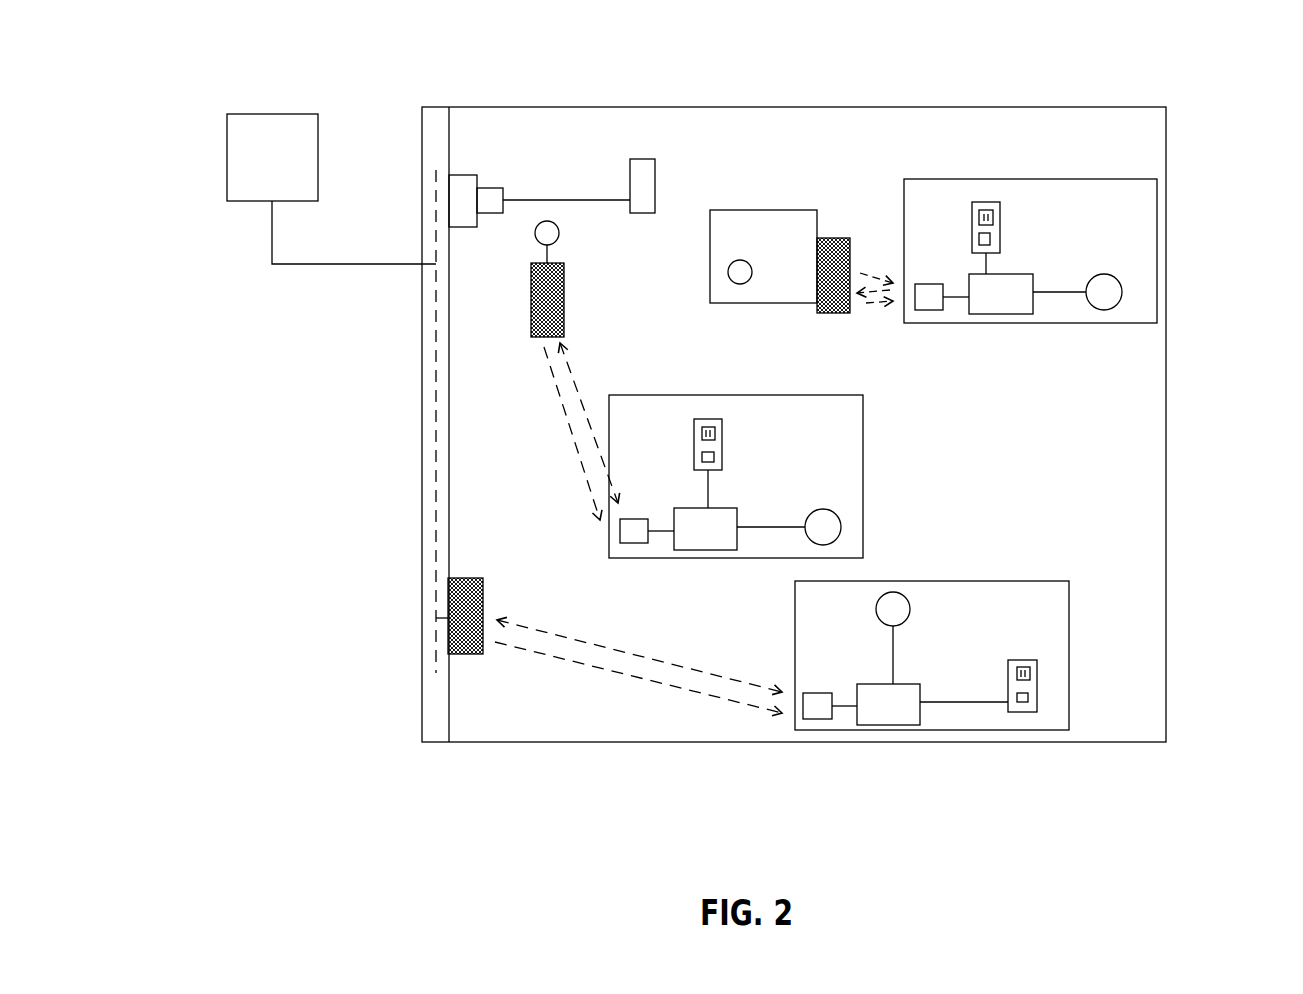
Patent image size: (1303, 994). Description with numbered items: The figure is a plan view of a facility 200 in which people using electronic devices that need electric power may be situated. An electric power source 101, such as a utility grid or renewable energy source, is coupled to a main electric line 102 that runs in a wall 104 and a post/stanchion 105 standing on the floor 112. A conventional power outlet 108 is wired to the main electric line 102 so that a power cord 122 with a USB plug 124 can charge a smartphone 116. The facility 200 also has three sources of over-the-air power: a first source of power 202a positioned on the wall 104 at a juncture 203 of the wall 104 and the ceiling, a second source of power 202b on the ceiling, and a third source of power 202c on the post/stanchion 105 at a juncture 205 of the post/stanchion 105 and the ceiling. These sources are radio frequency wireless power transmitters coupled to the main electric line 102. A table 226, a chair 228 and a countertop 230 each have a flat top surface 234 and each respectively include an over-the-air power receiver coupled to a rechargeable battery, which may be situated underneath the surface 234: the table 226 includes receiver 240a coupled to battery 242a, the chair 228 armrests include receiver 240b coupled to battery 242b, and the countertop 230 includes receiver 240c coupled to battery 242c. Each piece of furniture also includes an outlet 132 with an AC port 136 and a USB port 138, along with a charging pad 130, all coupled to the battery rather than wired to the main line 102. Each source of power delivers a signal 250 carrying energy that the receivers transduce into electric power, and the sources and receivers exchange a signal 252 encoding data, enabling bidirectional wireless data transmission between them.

The facility 200 is at (1077, 53).
The electric power source 101 is at (294, 169).
The wall 104 is at (434, 742).
The floor 112 is at (1072, 459).
The main electric line 102 is at (559, 234).
The second power outlet 108 is at (466, 175).
The USB plug 124 is at (488, 190).
The power cord 122 is at (562, 198).
The smartphone 116 is at (654, 159).
The post/stanchion 105 is at (790, 210).
The first source of power 202a is at (467, 578).
The second source of power 202b is at (567, 300).
The third source of power 202c is at (834, 314).
The juncture of wall and ceiling 203 is at (459, 673).
The juncture of post/stanchion and ceiling 205 is at (812, 320).
The signal 250 is at (862, 272).
The signal encoding data 252 is at (570, 375).
The flat top surface 234 is at (883, 454).
The table 226 is at (864, 460).
The chair 228 is at (1032, 580).
The countertop 230 is at (1057, 323).
The outlet 132 is at (917, 427).
The AC port 136 is at (995, 215).
The USB port 138 is at (995, 240).
The receiver 240a is at (813, 693).
The receiver 240b is at (632, 519).
The receiver 240c is at (923, 284).
The battery 242a is at (922, 714).
The battery 242b is at (702, 550).
The battery 242c is at (1000, 314).
The charging pad 130 is at (1105, 310).